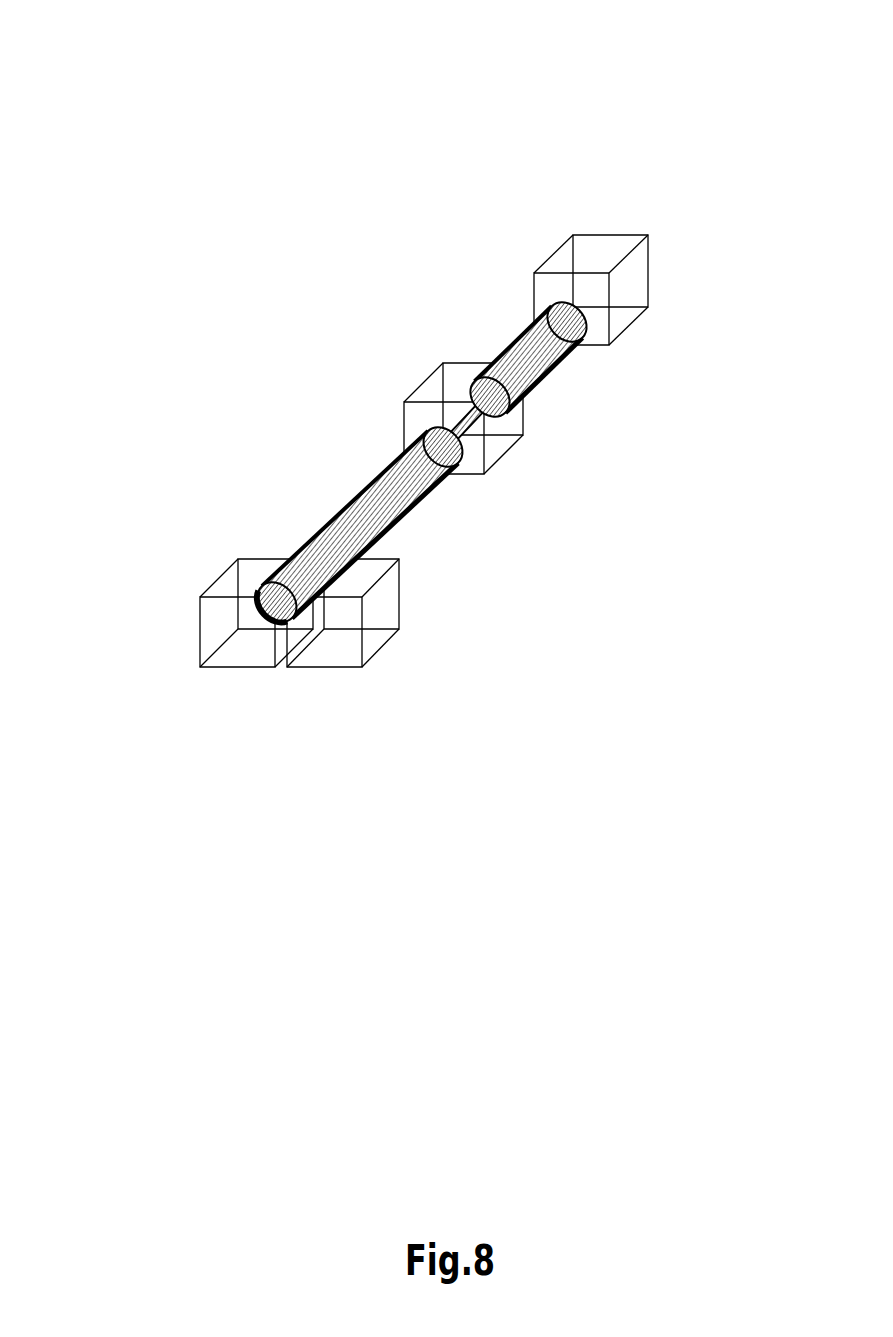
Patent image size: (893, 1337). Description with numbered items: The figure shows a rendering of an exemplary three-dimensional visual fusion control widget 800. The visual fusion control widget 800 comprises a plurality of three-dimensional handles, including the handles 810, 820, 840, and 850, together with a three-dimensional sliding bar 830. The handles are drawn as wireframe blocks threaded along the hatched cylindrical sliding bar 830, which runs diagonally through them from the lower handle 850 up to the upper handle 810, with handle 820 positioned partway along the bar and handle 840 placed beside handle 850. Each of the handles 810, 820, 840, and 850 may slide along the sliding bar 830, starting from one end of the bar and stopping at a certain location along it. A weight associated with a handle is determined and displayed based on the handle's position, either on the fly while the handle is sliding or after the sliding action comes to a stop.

The 3D visual fusion control widget 800 is at (413, 345).
The 3D handle 810 is at (610, 248).
The 3D handle 820 is at (503, 439).
The 3D sliding bar 830 is at (358, 502).
The 3D handle 840 is at (375, 635).
The 3D handle 850 is at (208, 628).